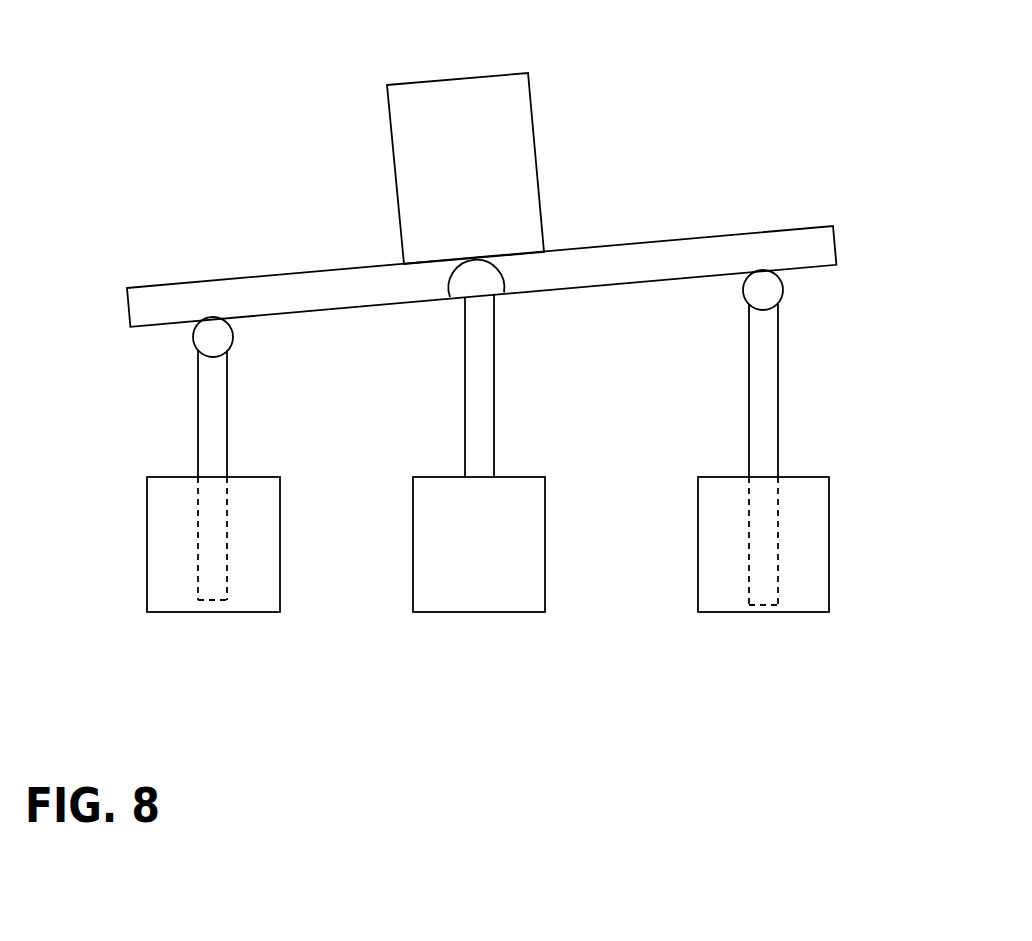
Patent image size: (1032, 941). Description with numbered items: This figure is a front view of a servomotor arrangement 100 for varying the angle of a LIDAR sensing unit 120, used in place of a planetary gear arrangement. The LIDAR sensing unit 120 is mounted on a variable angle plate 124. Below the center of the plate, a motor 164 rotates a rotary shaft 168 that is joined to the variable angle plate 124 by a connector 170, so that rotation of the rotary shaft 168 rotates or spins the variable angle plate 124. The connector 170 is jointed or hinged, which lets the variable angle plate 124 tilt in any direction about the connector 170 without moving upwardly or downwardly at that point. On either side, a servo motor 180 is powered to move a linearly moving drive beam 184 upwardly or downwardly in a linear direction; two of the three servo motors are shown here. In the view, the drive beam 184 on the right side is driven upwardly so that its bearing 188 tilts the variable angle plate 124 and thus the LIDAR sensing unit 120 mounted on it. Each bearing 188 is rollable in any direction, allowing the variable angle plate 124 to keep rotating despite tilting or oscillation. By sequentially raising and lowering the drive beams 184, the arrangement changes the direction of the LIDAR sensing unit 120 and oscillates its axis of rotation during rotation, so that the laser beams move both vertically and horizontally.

The servomotor arrangement 100 is at (274, 120).
The LIDAR sensing unit 120 is at (532, 102).
The variable angle plate 124 is at (155, 287).
The motor 164 is at (545, 590).
The rotary shaft 168 is at (473, 400).
The connector 170 is at (487, 282).
The servo motor 180 is at (280, 585).
The drive beam 184 is at (198, 415).
The bearing 188 is at (223, 332).